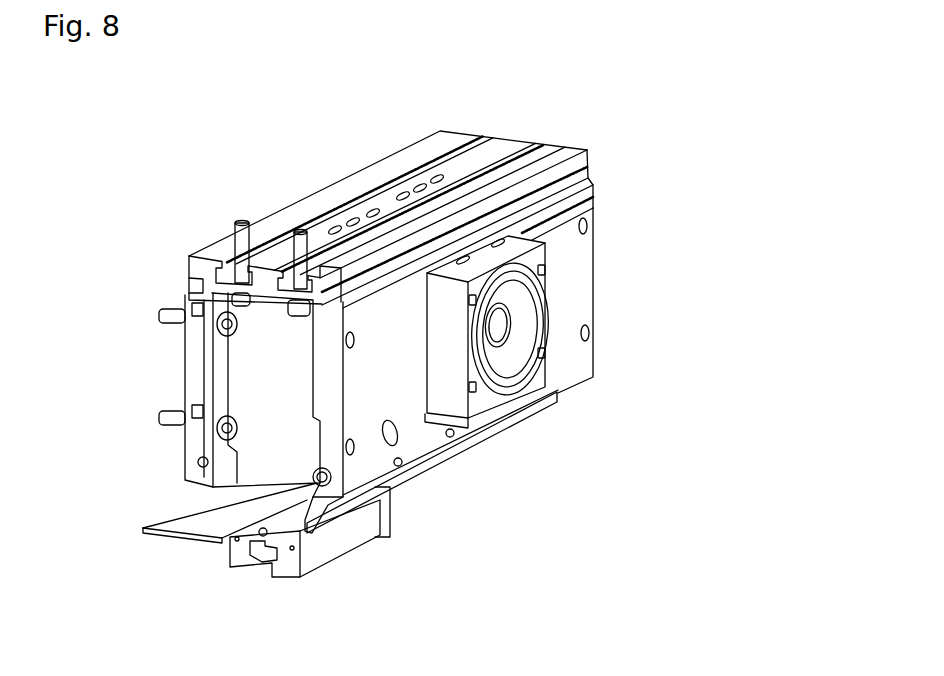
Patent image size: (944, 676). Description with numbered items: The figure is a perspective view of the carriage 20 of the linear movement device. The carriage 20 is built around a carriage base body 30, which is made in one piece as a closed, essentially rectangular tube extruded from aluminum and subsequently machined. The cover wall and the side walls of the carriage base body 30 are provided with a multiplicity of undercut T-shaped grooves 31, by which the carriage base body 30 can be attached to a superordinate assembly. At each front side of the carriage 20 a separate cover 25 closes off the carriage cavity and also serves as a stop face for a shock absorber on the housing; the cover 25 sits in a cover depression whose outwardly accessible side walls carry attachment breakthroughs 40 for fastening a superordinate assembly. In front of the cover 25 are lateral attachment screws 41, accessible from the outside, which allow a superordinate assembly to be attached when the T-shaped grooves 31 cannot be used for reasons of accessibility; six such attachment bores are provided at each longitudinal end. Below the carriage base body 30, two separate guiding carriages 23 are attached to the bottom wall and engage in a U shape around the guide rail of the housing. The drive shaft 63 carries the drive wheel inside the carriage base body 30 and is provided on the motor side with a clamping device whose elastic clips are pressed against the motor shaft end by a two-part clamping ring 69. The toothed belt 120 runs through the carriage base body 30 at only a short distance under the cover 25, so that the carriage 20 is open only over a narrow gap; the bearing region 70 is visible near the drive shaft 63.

The carriage 20 is at (687, 110).
The guiding carriage 23 is at (340, 537).
The cover 25 is at (263, 378).
The carriage base body 30 is at (363, 168).
The undercut T-shaped grooves 31 is at (190, 296).
The attachment breakthroughs 40 is at (392, 499).
The lateral attachment screws 41 is at (232, 240).
The drive shaft 63 is at (512, 333).
The clamping ring 69 is at (485, 330).
The bearing rings 70 is at (500, 250).
The toothed belt 120 is at (192, 522).